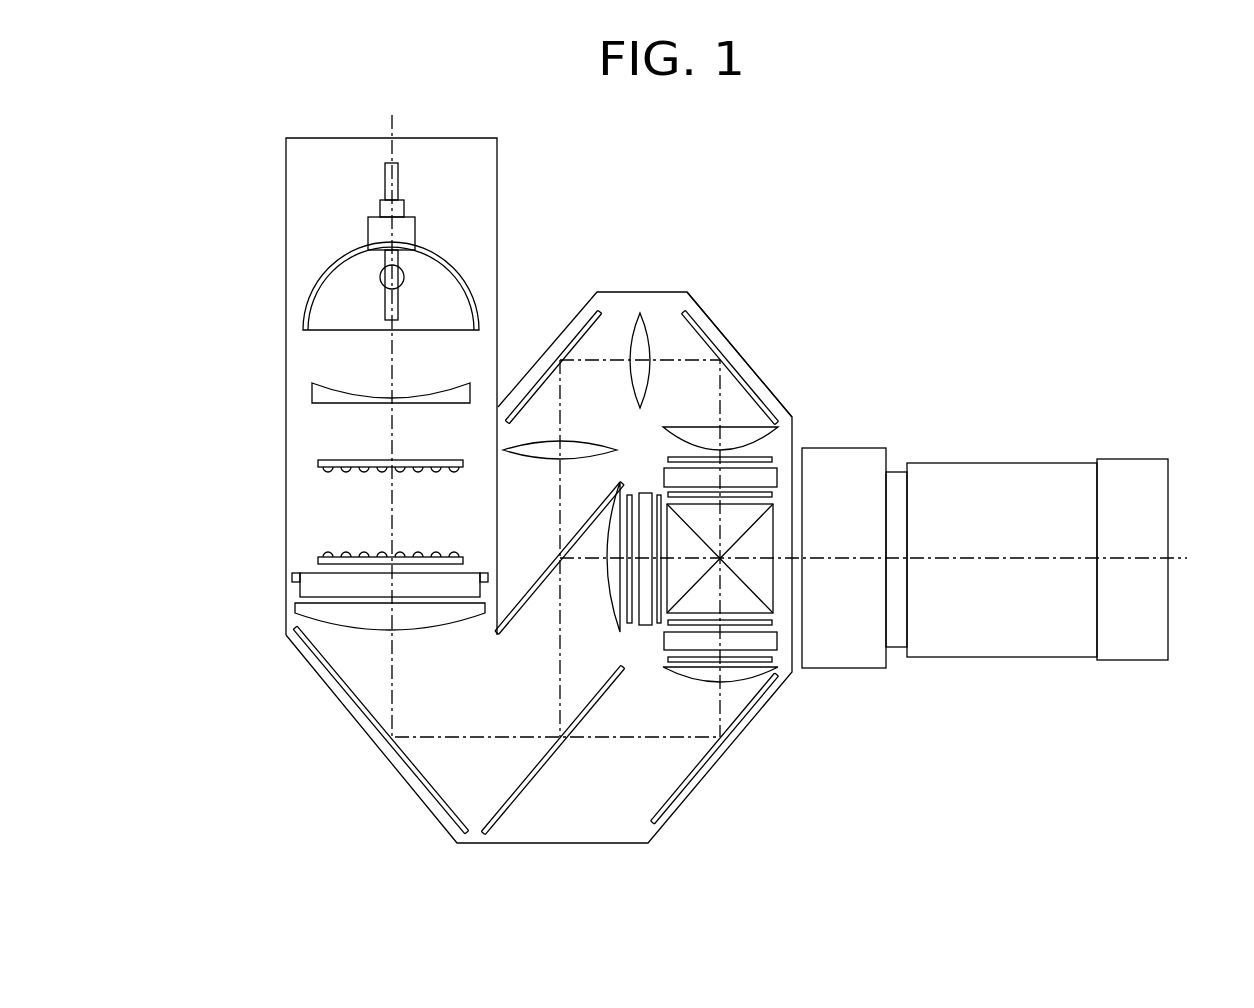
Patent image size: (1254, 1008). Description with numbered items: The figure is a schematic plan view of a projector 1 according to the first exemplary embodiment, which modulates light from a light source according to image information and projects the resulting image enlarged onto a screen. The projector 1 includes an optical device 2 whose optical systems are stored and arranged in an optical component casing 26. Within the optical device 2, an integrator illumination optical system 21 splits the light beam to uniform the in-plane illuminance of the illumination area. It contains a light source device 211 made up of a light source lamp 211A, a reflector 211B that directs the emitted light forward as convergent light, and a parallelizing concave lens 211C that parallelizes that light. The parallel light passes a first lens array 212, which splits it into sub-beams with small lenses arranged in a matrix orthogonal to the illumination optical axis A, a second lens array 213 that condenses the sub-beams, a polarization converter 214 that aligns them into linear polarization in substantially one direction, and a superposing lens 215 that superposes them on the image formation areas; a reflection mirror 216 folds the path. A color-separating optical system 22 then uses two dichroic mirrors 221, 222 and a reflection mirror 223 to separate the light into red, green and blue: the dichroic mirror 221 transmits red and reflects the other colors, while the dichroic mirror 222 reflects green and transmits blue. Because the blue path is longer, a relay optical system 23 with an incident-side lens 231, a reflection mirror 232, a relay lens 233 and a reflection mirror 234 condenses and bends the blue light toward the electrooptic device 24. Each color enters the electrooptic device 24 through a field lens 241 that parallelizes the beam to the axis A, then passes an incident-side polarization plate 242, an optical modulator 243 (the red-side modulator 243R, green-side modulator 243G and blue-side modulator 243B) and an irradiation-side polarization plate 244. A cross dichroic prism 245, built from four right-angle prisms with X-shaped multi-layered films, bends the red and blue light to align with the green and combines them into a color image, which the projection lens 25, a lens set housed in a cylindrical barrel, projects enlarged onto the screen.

The projector 1 is at (991, 273).
The optical device 2 is at (667, 510).
The integrator illumination optical system 21 is at (343, 510).
The light source device 211 is at (200, 262).
The light source lamp 211A is at (387, 310).
The reflector 211B is at (312, 297).
The parallelizing concave lens 211C is at (312, 387).
The first lens array 212 is at (317, 462).
The second lens array 213 is at (317, 557).
The polarization converter 214 is at (300, 590).
The superposing lens 215 is at (297, 608).
The reflection mirror 216 is at (368, 725).
The color-separating optical system 22 is at (592, 790).
The dichroic mirror 221 is at (522, 793).
The dichroic mirror 222 is at (525, 605).
The reflection mirror 223 is at (695, 773).
The relay optical system 23 is at (662, 327).
The incident-side lens 231 is at (545, 440).
The reflection mirror 232 is at (589, 316).
The relay lens 233 is at (640, 313).
The reflection mirror 234 is at (700, 320).
The electrooptic device 24 is at (780, 664).
The field lens 241 is at (700, 427).
The incident-side polarization plate 242 is at (772, 456).
The optical modulator 243 is at (780, 539).
The optical modulator at the green light side 243G is at (646, 493).
The optical modulator at the blue light side 243B is at (775, 466).
The optical modulator at the red light side 243R is at (778, 640).
The irradiation-side polarization plate 244 is at (773, 494).
The cross dichroic prism 245 is at (773, 522).
The projection lens 25 is at (1020, 428).
The optical component casing 26 is at (742, 352).
The illumination optical axis A is at (480, 737).